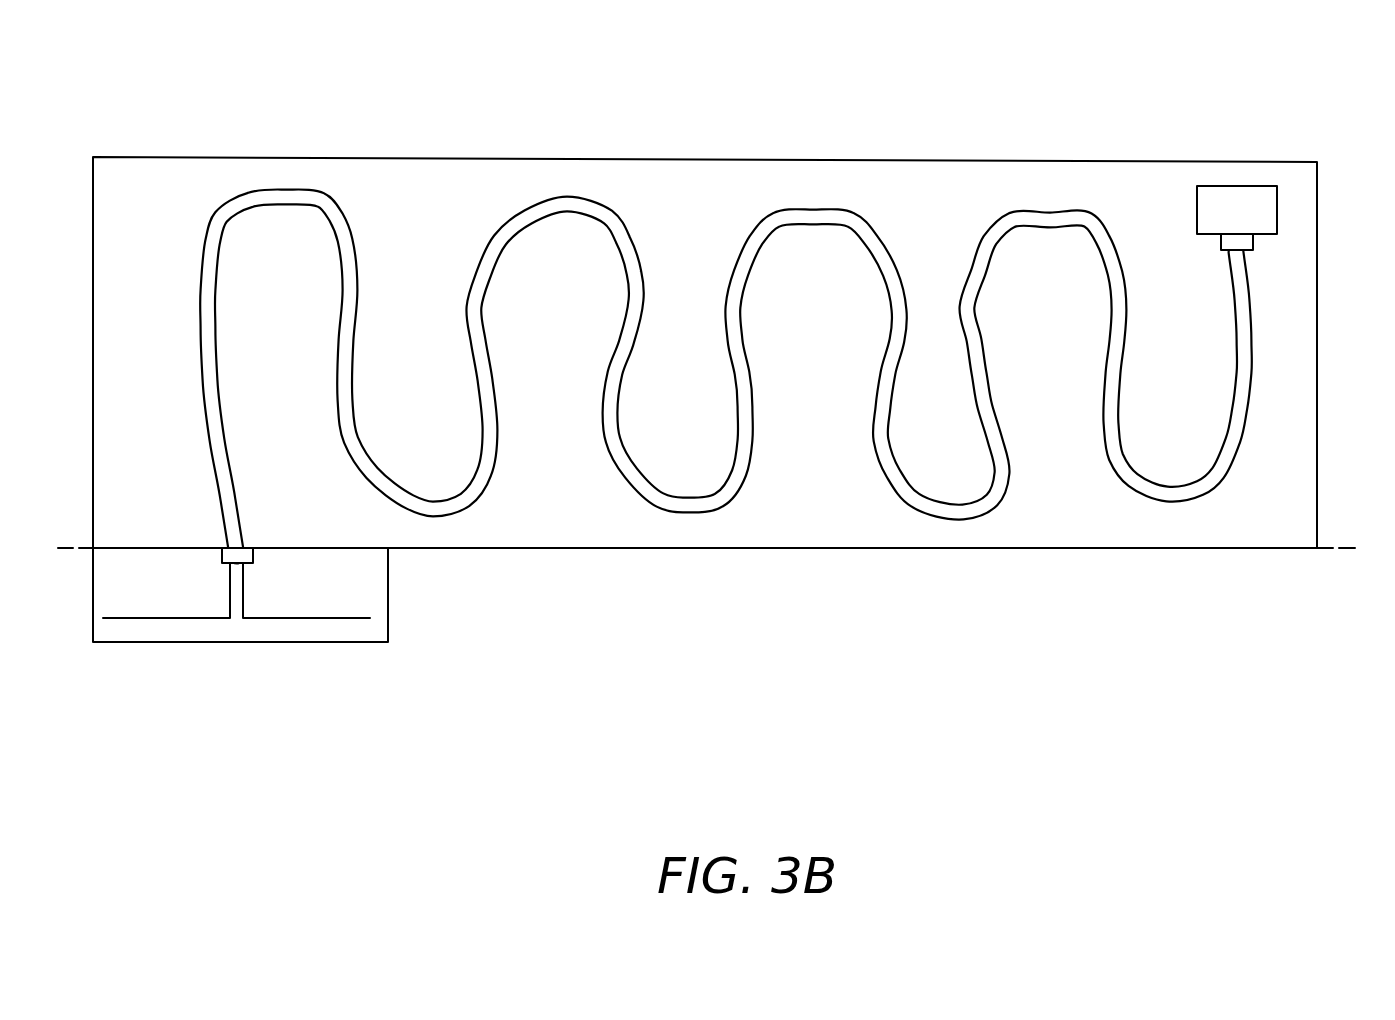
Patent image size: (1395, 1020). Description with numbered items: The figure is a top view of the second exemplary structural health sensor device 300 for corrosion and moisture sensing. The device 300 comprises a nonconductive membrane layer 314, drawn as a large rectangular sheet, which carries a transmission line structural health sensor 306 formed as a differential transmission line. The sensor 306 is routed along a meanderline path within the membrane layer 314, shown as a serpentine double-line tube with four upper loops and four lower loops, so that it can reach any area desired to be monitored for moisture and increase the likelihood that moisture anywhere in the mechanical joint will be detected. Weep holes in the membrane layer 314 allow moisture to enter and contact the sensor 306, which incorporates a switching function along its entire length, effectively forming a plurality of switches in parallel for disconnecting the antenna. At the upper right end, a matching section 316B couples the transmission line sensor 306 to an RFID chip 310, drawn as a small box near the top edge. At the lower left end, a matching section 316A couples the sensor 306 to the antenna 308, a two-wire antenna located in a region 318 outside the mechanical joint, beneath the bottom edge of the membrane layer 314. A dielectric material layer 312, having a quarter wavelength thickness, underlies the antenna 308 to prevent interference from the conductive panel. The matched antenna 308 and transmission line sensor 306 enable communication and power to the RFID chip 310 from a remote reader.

The structural health sensor device 300 is at (717, 410).
The transmission line structural health sensor 306 is at (657, 500).
The antenna 308 is at (235, 628).
The RFID chip 310 is at (1237, 210).
The dielectric material layer 312 is at (338, 633).
The nonconductive membrane layer 314 is at (422, 200).
The matching section 316A is at (253, 555).
The matching section 316B is at (1221, 247).
The region outside the mechanical joint 318 is at (316, 645).